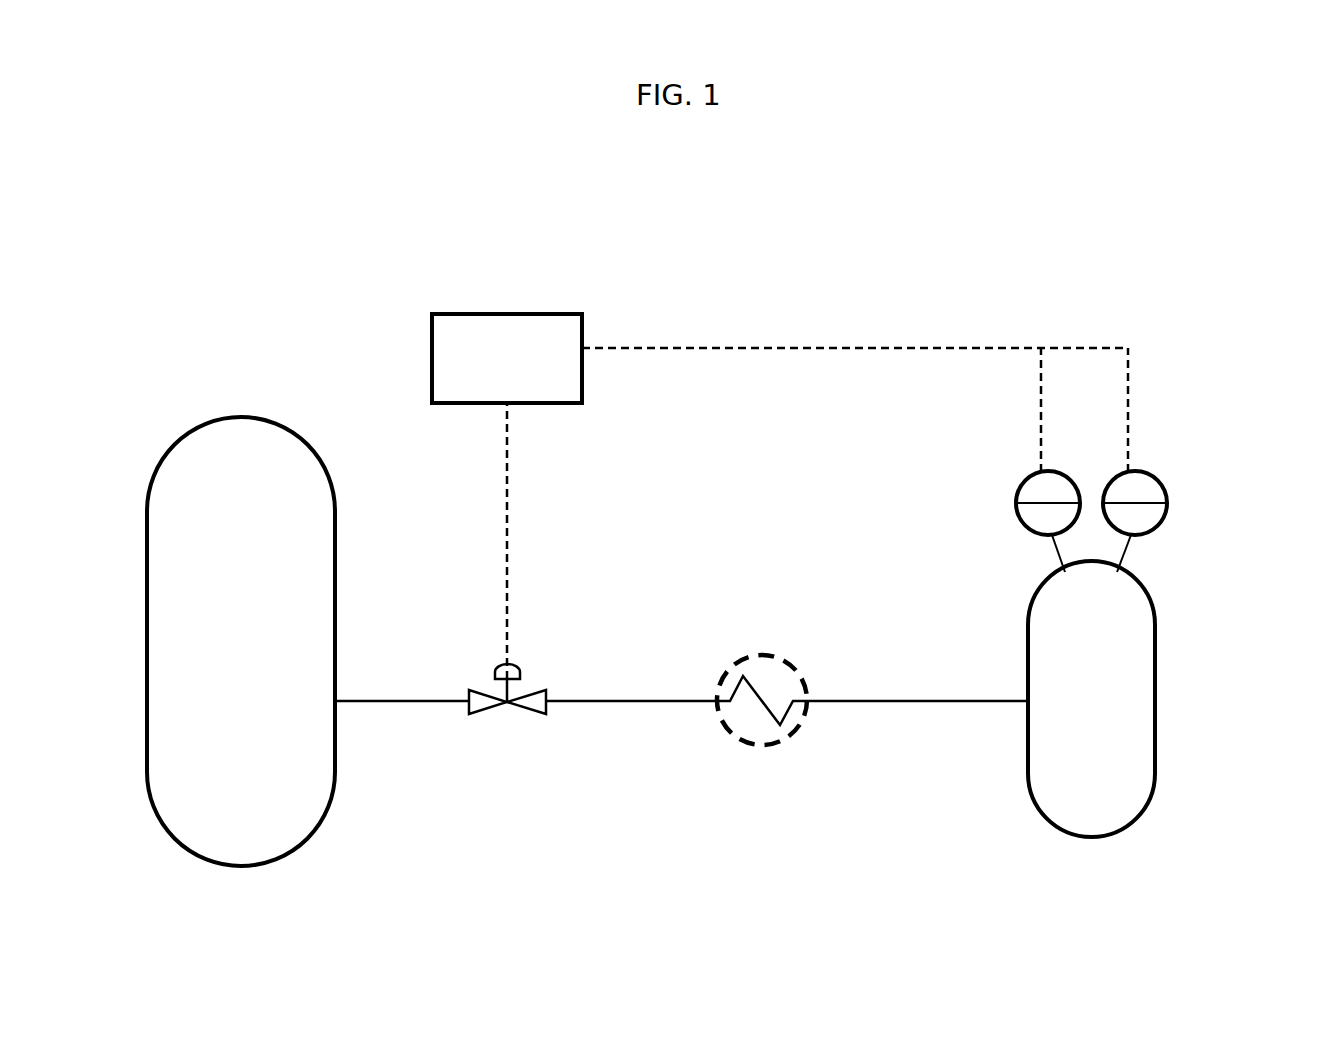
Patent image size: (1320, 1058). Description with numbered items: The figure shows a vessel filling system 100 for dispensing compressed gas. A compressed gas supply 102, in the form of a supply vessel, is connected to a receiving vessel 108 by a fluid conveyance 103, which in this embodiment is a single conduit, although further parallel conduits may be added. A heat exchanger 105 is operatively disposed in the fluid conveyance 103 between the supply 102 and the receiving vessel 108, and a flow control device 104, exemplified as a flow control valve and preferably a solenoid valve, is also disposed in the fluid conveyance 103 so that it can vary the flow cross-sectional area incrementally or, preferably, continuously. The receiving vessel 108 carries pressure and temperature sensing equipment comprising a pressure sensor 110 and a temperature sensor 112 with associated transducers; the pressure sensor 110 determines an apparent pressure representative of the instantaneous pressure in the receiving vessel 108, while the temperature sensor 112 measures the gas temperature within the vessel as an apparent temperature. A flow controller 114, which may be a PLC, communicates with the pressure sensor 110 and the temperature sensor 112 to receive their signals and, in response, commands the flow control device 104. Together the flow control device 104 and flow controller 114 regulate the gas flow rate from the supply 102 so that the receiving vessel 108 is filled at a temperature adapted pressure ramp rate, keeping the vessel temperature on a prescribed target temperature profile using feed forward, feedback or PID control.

The vessel filling system 100 is at (968, 262).
The compressed gas supply 102 is at (318, 443).
The fluid conveyance 103 is at (860, 700).
The flow control device 104 is at (546, 690).
The heat exchanger 105 is at (770, 655).
The receiving vessel 108 is at (1155, 640).
The pressure sensor 110 is at (1012, 487).
The temperature sensor 112 is at (1165, 487).
The flow controller 114 is at (582, 345).